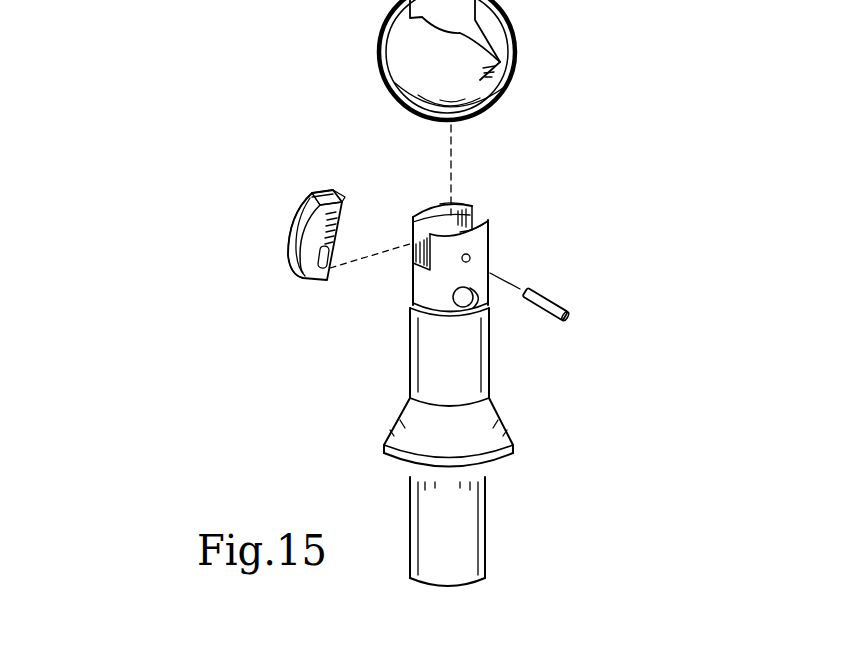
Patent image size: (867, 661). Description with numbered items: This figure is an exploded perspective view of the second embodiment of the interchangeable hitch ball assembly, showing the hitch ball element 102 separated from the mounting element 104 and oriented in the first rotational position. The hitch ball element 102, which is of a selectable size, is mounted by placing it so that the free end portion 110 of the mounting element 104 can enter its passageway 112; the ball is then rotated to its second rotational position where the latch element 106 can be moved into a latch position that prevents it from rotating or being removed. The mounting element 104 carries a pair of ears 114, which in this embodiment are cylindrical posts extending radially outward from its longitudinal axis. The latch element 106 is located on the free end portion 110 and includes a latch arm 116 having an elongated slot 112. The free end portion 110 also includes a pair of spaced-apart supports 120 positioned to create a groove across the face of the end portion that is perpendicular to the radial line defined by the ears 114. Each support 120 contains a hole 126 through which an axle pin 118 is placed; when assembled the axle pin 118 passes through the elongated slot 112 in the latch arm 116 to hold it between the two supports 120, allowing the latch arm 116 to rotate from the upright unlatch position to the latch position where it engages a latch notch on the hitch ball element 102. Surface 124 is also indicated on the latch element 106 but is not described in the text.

The hitch ball element 102 is at (533, 55).
The mounting element 104 is at (592, 455).
The latch element 106 is at (220, 257).
The free end portion 110 is at (553, 268).
The elongated slot 112 is at (405, 122).
The ears 114 is at (488, 325).
The latch arm 116 is at (312, 193).
The axle pin 118 is at (555, 302).
The supports 120 is at (470, 192).
The curved surface of insert 124 is at (298, 232).
The hole 126 is at (472, 255).